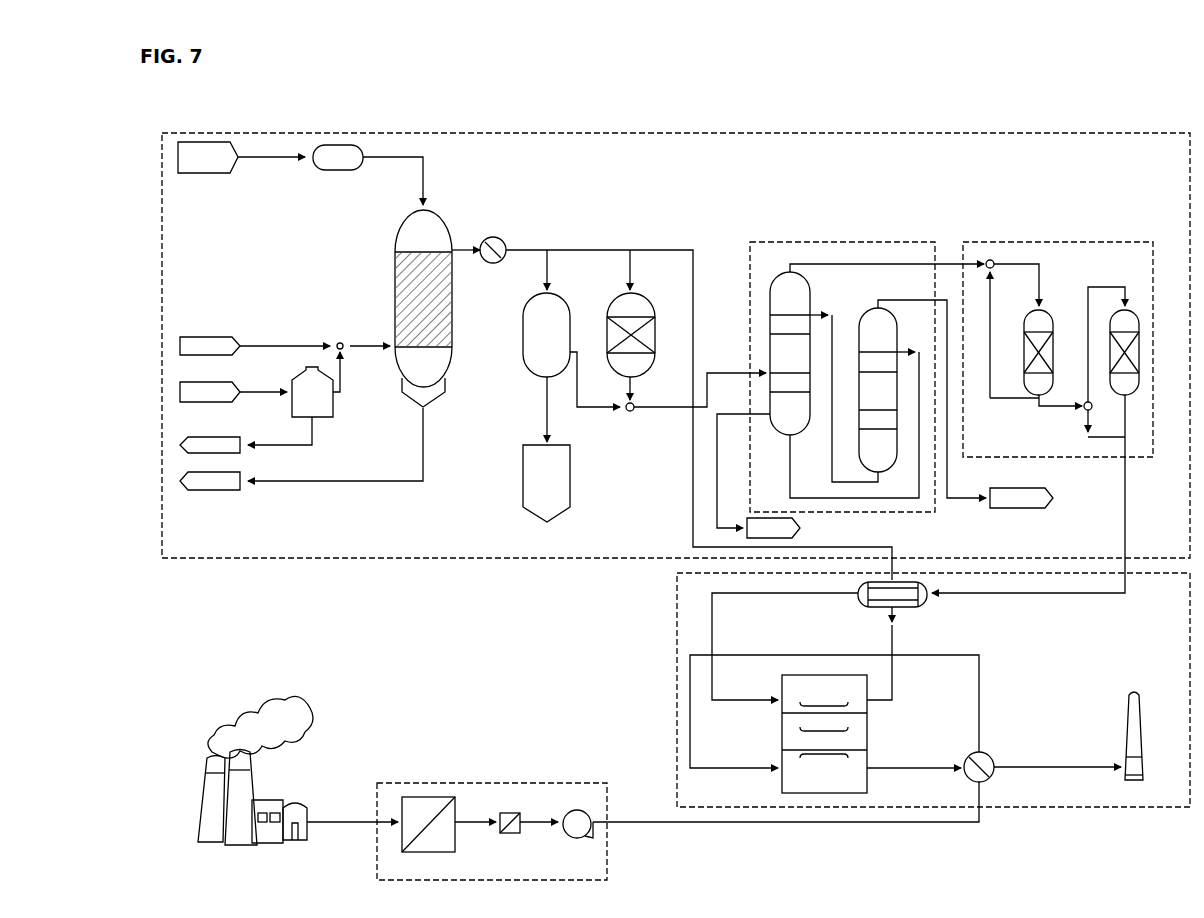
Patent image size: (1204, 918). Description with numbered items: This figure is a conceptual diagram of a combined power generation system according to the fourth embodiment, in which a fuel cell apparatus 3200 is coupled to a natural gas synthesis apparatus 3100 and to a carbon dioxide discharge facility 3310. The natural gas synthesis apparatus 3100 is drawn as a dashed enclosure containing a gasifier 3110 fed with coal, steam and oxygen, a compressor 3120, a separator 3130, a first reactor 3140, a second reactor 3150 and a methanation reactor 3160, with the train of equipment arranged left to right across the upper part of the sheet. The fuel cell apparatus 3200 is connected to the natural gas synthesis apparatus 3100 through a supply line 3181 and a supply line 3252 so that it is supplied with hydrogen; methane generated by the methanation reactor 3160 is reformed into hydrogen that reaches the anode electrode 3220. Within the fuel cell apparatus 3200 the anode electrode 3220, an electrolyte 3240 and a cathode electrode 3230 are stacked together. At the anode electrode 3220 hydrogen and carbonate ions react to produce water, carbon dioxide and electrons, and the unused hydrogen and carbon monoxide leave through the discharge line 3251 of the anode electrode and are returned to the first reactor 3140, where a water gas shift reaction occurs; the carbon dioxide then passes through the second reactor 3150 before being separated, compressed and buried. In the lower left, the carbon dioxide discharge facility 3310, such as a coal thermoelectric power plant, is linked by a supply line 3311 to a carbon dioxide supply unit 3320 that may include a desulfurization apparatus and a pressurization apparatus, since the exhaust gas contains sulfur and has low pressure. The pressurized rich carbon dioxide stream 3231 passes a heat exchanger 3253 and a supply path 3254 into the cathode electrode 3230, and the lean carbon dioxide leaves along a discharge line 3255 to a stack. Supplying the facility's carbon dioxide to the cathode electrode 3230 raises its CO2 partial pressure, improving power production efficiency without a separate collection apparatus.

The natural gas synthesis apparatus 3100 is at (490, 558).
The gasifier 3110 is at (440, 212).
The compressor 3120 is at (493, 237).
The separator 3130 is at (523, 337).
The first reactor 3140 is at (641, 294).
The second reactor 3150 is at (843, 242).
The methanation reactor 3160 is at (1058, 242).
The supply line 3181 is at (1128, 507).
The fuel cell apparatus 3200 is at (677, 688).
The anode electrode 3220 is at (782, 686).
The cathode electrode 3230 is at (782, 781).
The electrolyte 3240 is at (782, 735).
The discharge line of the anode electrode 3251 is at (893, 638).
The supply line 3252 is at (712, 638).
The heat exchanger 3253 is at (930, 765).
The CO2 supply line 3254 is at (981, 681).
The lean CO2 discharge line 3255 is at (1077, 765).
The rich CO2 supply line 3231 is at (638, 819).
The carbon dioxide discharge facility 3310 is at (280, 797).
The supply line 3311 is at (348, 819).
The carbon dioxide supply unit 3320 is at (490, 783).